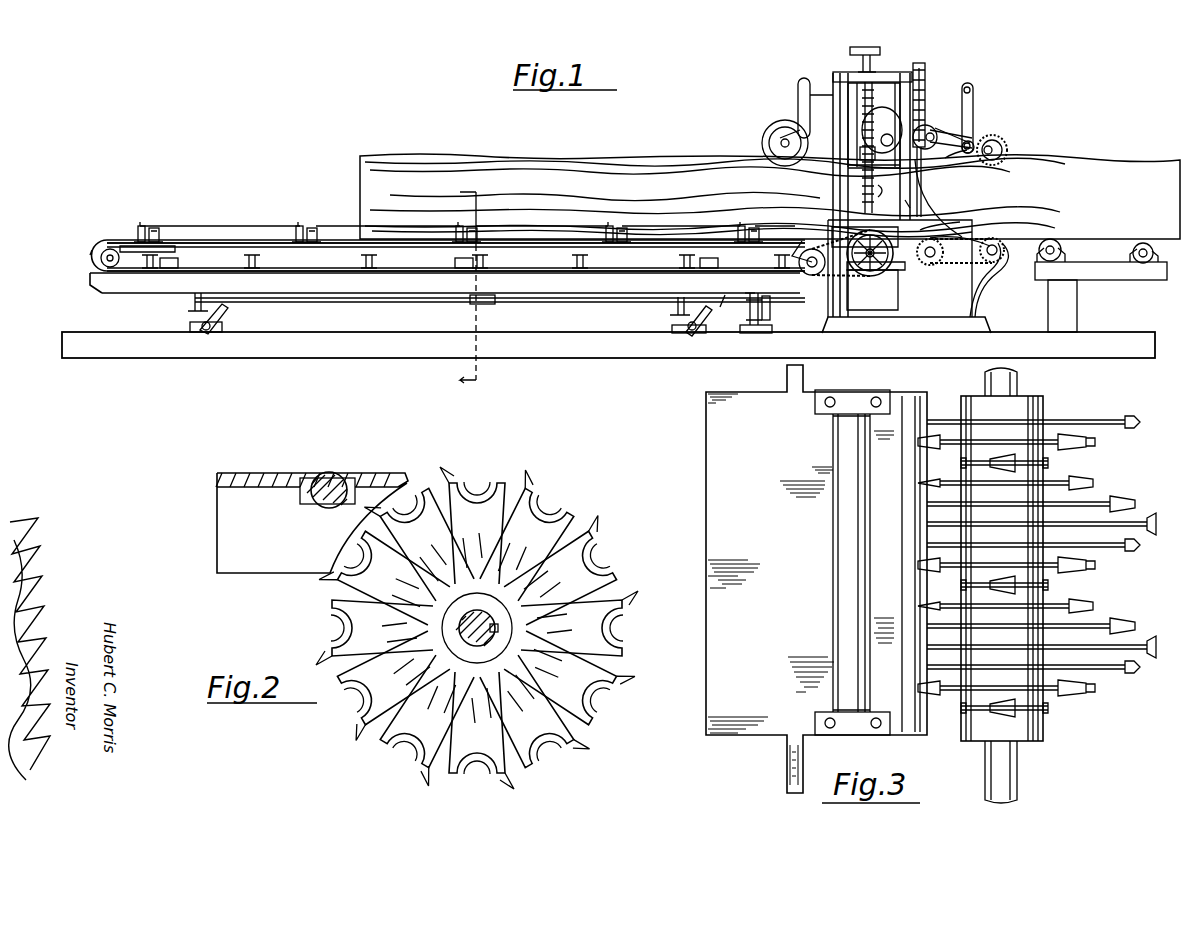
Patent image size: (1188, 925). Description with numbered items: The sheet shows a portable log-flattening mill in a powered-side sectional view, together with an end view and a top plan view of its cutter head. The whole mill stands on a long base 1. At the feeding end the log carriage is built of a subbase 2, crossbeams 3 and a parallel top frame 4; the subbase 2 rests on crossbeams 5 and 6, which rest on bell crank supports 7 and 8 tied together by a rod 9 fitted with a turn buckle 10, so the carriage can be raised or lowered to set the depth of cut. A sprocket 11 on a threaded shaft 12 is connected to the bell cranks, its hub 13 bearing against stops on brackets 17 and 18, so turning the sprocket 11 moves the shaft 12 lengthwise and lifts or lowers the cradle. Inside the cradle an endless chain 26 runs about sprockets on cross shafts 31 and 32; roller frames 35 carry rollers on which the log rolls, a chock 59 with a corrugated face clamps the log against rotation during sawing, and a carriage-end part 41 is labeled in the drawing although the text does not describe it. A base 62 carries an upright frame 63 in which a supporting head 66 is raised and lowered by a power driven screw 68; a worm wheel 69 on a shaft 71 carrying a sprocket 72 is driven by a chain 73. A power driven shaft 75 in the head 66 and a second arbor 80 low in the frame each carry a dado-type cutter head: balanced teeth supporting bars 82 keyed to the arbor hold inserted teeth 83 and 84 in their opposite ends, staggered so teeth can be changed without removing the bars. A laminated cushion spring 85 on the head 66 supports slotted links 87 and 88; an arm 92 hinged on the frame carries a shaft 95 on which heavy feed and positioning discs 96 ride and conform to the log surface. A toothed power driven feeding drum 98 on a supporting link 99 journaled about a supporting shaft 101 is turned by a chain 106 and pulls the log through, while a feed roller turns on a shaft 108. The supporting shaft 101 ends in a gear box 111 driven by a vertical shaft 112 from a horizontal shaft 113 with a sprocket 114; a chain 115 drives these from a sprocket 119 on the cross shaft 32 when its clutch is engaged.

In FIG. 1, the base 1 is at (585, 353).
In FIG. 1, the subbase 2 is at (407, 296).
In FIG. 1, the crossbeams 3 is at (332, 279).
In FIG. 1, the top frame 4 is at (605, 283).
In FIG. 1, the crossbeam 5 is at (188, 308).
In FIG. 1, the crossbeam 6 is at (673, 312).
In FIG. 1, the bell crank support 7 is at (222, 311).
In FIG. 1, the bell crank support 8 is at (707, 314).
In FIG. 1, the rod 9 is at (320, 312).
In FIG. 1, the turn buckle 10 is at (470, 300).
In FIG. 1, the sprocket 11 is at (746, 300).
In FIG. 1, the threaded shaft 12 is at (776, 312).
In FIG. 1, the hub 13 is at (717, 289).
In FIG. 1, the bracket 17 is at (737, 332).
In FIG. 1, the bracket 18 is at (766, 328).
In FIG. 1, the endless chain 26 is at (116, 238).
In FIG. 1, the cross shaft 31 is at (93, 248).
In FIG. 1, the cross shaft 32 is at (814, 240).
In FIG. 1, the roller frame 35 is at (670, 197).
In FIG. 1, the chain guide plate 41 is at (180, 242).
In FIG. 1, the chock 59 is at (747, 214).
In FIG. 1, the base 62 is at (871, 335).
In FIG. 1, the frame 63 is at (925, 202).
In FIG. 1, the supporting head 66 is at (970, 136).
In FIG. 1, the power driven screw 68 is at (872, 128).
In FIG. 1, the worm wheel 69 is at (880, 68).
In FIG. 1, the shaft 71 is at (895, 73).
In FIG. 1, the sprocket 72 is at (931, 71).
In FIG. 1, the chain 73 is at (934, 90).
In FIG. 1, the power driven shaft 75 is at (928, 132).
In FIG. 1, the second arbor 80 is at (866, 282).
In FIG. 3, the second arbor 80 is at (1011, 385).
In FIG. 2, the balanced teeth supporting bars 82 is at (552, 565).
In FIG. 3, the balanced teeth supporting bars 82 is at (1066, 470).
In FIG. 2, the inserted tooth 83 is at (483, 488).
In FIG. 3, the inserted tooth 83 is at (1122, 498).
In FIG. 2, the inserted tooth 84 is at (494, 776).
In FIG. 1, the cushion spring 85 is at (970, 94).
In FIG. 1, the link 87 is at (965, 124).
In FIG. 1, the link 88 is at (800, 96).
In FIG. 1, the arm 92 is at (819, 120).
In FIG. 1, the shaft 95 is at (780, 144).
In FIG. 1, the feed and positioning discs 96 is at (766, 126).
In FIG. 1, the power driven feeding drum 98 is at (997, 142).
In FIG. 1, the supporting link 99 is at (963, 157).
In FIG. 1, the supporting shaft 101 is at (970, 142).
In FIG. 1, the chain 106 is at (995, 144).
In FIG. 1, the shaft 108 is at (1030, 248).
In FIG. 1, the gear box 111 is at (895, 173).
In FIG. 1, the shaft 112 is at (905, 198).
In FIG. 1, the shaft 113 is at (990, 230).
In FIG. 1, the sprocket 114 is at (945, 235).
In FIG. 1, the chain 115 is at (920, 270).
In FIG. 1, the sprocket 119 is at (805, 274).